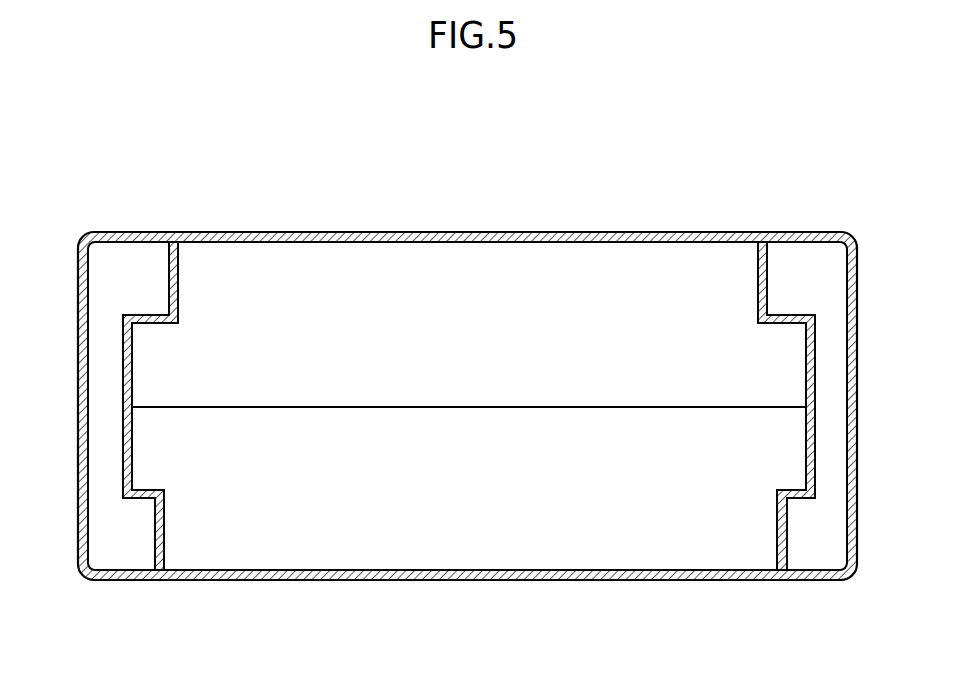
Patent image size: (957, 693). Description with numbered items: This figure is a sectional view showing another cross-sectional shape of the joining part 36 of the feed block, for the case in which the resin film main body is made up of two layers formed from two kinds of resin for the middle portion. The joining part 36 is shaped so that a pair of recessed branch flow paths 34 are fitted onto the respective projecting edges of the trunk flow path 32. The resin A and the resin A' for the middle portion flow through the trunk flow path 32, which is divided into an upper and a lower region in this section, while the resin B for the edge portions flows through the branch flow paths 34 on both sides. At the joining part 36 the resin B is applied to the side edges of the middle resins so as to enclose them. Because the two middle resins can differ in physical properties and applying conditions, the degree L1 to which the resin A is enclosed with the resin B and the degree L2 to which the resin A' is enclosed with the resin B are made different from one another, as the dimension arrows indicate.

The joining part 36 is at (468, 229).
The branch flow paths 34 is at (150, 298).
The trunk flow path 32 is at (640, 482).
The resin for the middle portion A is at (469, 347).
The resin for the middle portion A' is at (471, 465).
The resin for the edge portions B is at (103, 397).
The degree of enclosing L1 is at (55, 162).
The degree of enclosing L2 is at (55, 653).